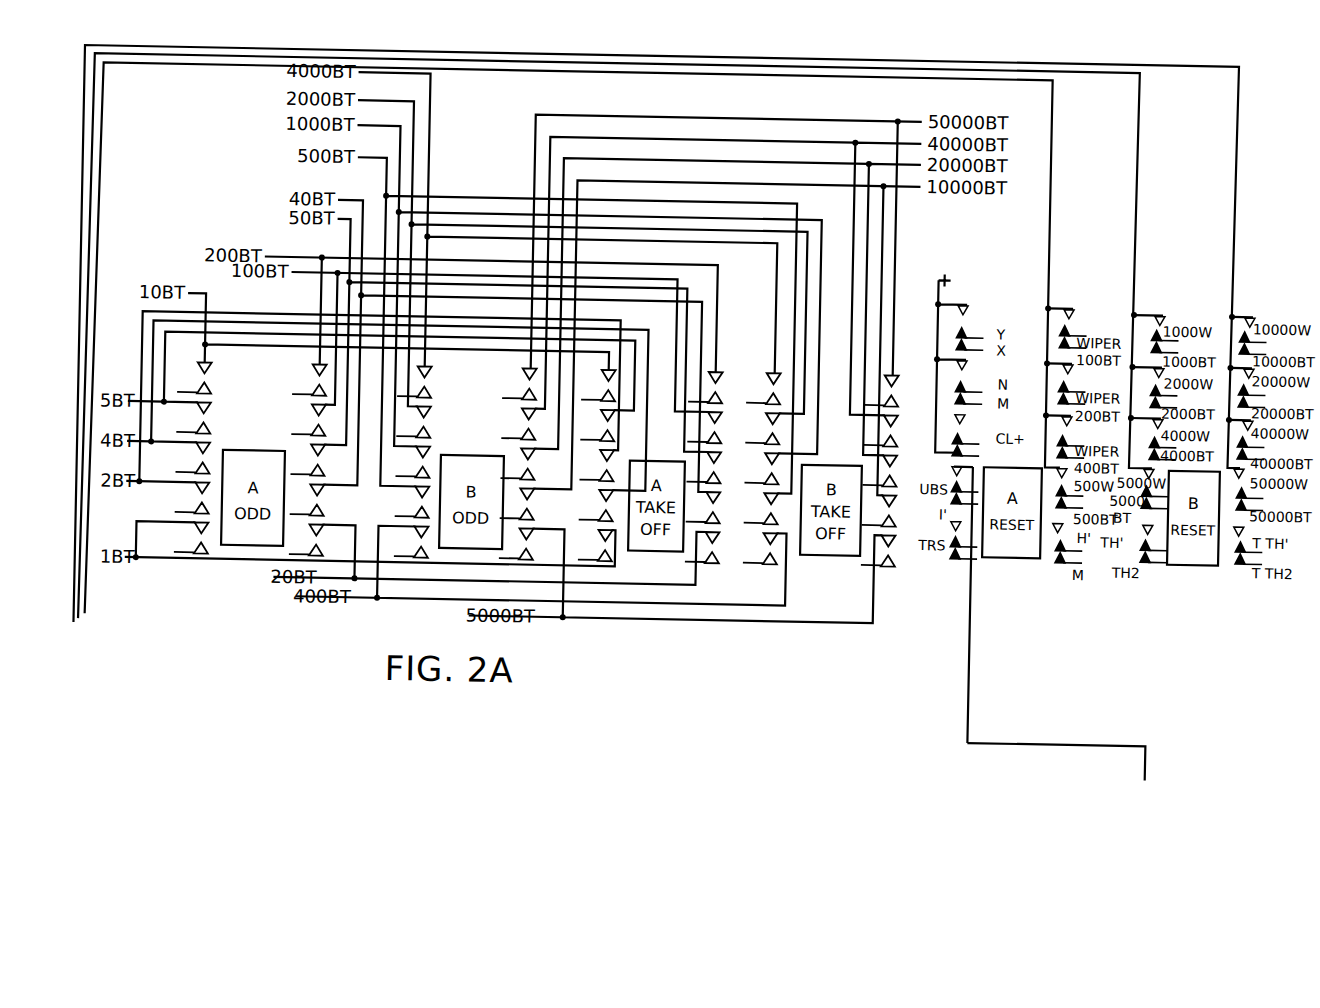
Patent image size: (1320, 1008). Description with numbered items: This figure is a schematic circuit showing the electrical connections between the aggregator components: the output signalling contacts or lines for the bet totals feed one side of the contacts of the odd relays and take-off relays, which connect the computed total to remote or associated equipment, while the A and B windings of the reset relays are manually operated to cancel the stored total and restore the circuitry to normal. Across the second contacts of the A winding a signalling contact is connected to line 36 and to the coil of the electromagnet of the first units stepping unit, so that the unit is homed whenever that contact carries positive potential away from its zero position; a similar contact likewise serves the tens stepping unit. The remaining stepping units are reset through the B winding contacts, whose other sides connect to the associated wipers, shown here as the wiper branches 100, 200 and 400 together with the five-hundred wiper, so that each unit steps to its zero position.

The line 36 is at (1159, 742).
The 100 wiper contact 100 is at (1081, 333).
The 200 wiper contact 200 is at (1080, 389).
The 400 wiper contact 400 is at (1079, 442).